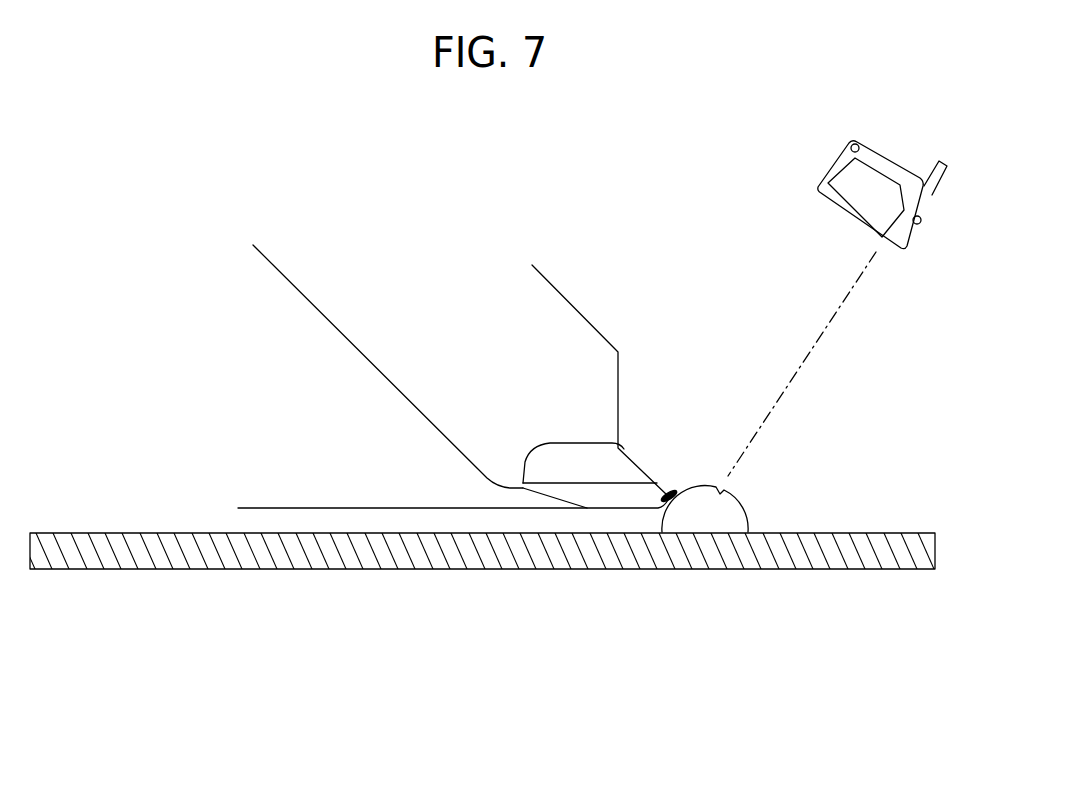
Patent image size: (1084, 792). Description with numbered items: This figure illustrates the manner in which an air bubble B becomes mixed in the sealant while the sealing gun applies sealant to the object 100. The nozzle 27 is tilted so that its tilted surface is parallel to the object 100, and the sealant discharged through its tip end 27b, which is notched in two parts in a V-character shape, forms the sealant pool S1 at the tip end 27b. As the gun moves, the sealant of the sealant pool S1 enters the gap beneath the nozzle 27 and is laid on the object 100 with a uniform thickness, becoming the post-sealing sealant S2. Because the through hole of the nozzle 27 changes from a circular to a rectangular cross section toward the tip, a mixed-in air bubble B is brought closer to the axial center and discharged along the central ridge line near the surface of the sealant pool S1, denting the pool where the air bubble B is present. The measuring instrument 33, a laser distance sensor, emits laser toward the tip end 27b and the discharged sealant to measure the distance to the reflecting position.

The nozzle 27 is at (603, 335).
The tip end 27b is at (645, 466).
The measuring instrument 33 is at (887, 158).
The sealant pool S1 is at (742, 509).
The post-sealing sealant S2 is at (402, 525).
The air bubble B is at (690, 569).
The object 100 is at (773, 569).